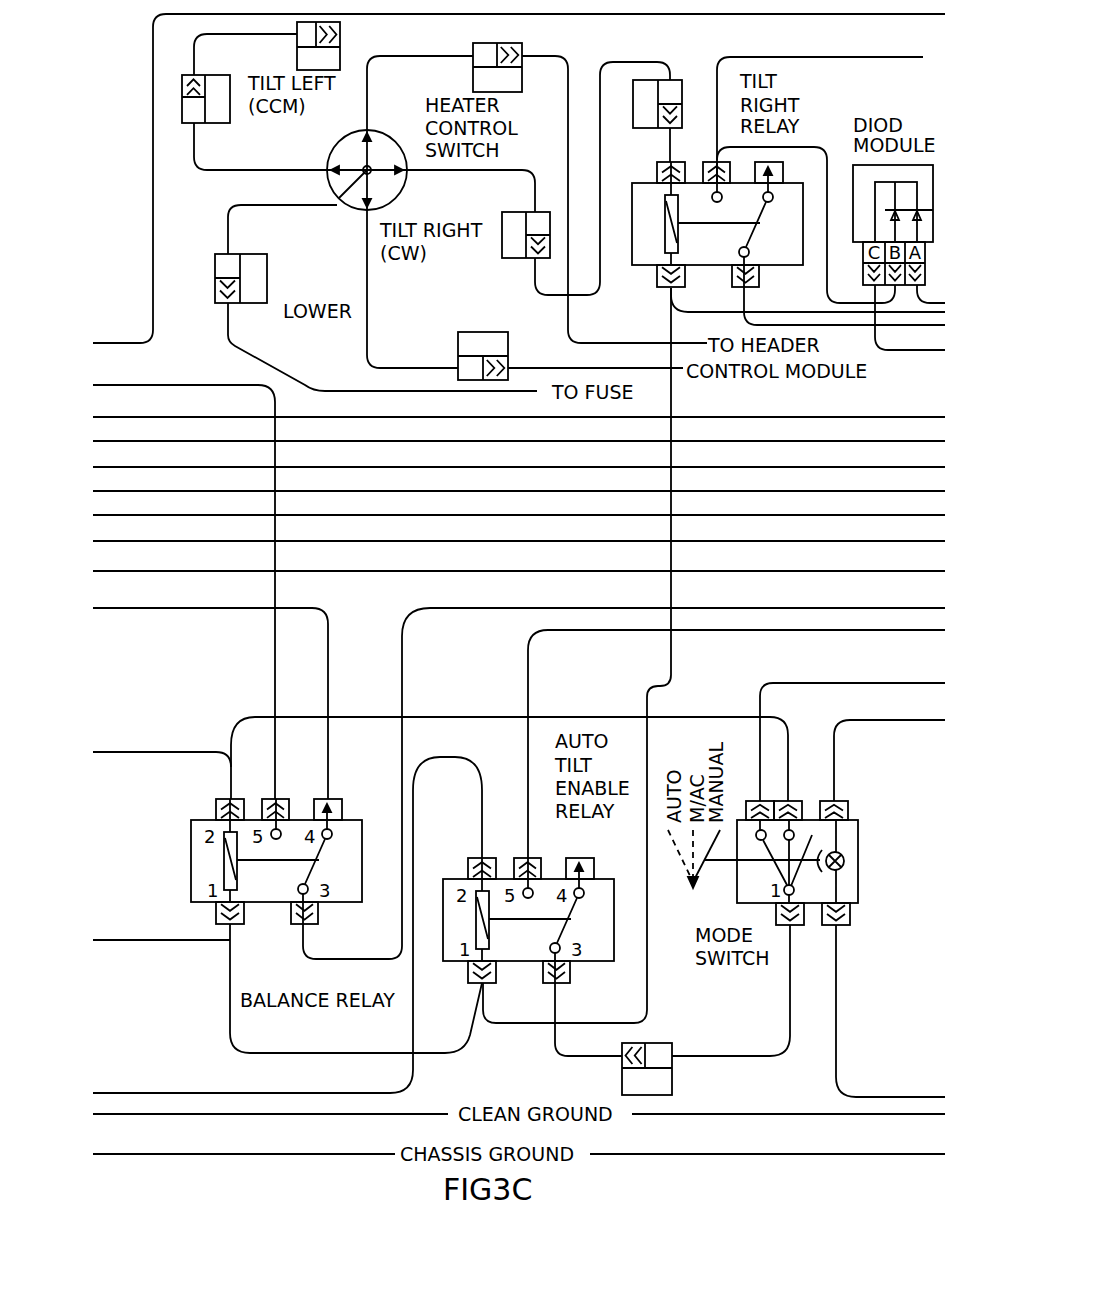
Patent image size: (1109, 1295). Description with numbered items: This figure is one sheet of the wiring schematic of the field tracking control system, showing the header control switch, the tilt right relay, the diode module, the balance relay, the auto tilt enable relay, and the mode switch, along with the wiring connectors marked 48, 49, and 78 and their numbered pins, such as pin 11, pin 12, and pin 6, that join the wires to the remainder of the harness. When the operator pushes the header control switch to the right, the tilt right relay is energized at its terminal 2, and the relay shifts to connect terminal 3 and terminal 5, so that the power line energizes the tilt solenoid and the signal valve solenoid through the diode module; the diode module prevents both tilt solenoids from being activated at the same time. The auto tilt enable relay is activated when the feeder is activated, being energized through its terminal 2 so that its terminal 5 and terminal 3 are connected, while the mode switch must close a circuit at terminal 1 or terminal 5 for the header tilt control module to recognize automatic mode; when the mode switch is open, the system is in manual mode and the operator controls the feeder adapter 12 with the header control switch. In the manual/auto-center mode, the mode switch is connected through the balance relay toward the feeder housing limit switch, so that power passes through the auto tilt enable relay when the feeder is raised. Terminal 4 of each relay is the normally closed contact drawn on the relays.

The terminal 1 is at (666, 265).
The terminal 2 is at (665, 186).
The terminal 3 is at (751, 265).
The relay terminal 4 is at (764, 186).
The terminal 5 is at (711, 186).
The connector pin 6 is at (469, 368).
The connector pin 11 is at (193, 112).
The feeder adapter 12 is at (538, 225).
The connector 48 is at (366, 211).
The connector 49 is at (241, 278).
The connector 78 is at (489, 558).